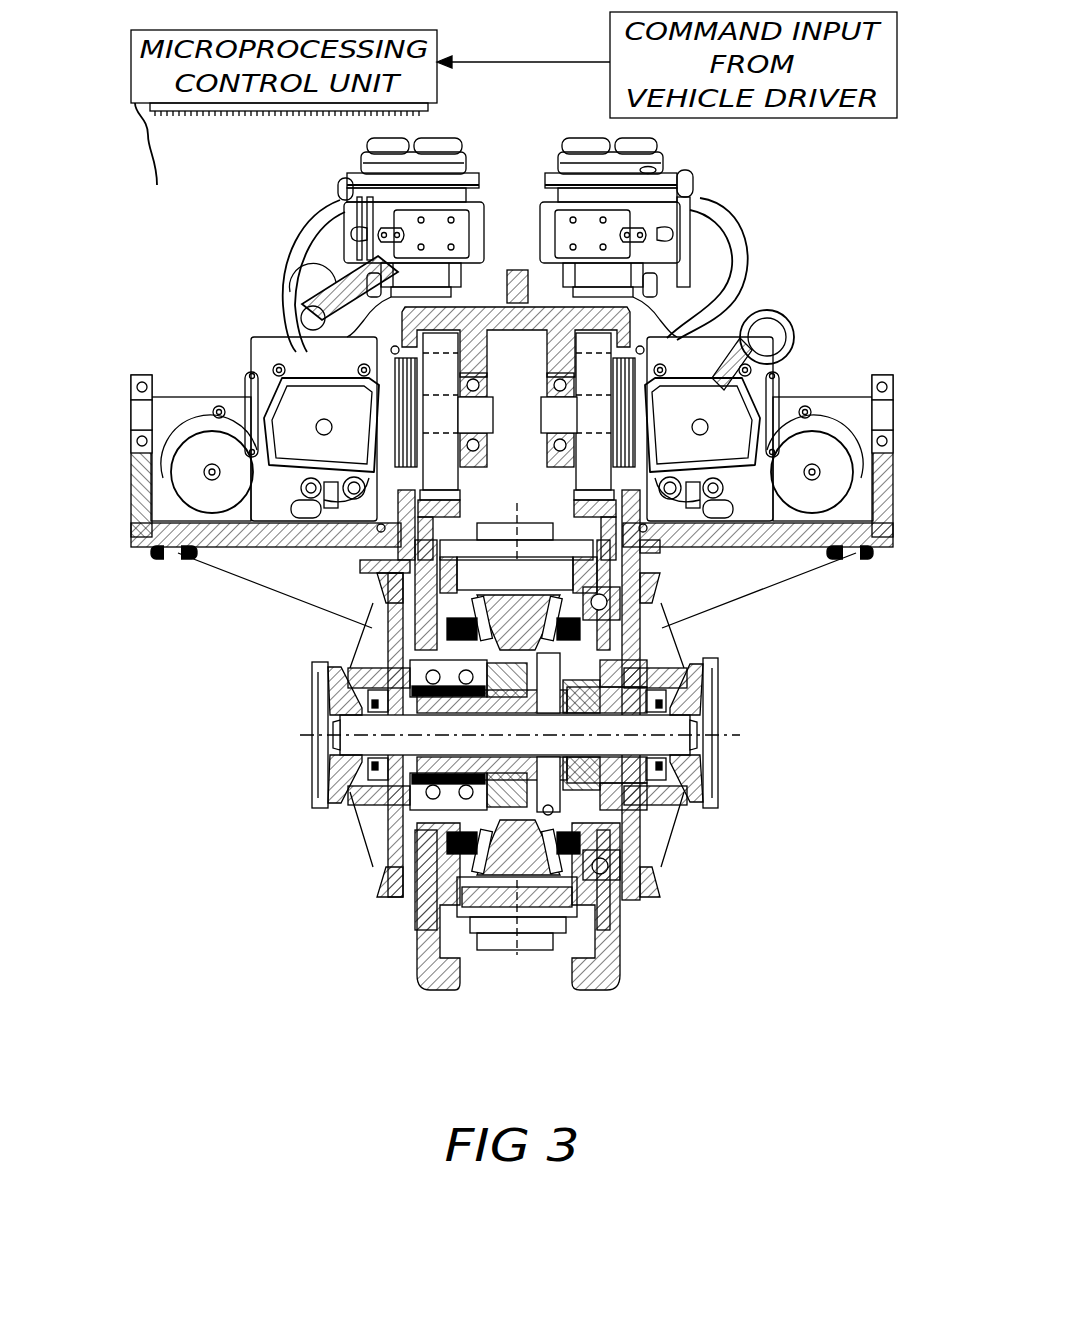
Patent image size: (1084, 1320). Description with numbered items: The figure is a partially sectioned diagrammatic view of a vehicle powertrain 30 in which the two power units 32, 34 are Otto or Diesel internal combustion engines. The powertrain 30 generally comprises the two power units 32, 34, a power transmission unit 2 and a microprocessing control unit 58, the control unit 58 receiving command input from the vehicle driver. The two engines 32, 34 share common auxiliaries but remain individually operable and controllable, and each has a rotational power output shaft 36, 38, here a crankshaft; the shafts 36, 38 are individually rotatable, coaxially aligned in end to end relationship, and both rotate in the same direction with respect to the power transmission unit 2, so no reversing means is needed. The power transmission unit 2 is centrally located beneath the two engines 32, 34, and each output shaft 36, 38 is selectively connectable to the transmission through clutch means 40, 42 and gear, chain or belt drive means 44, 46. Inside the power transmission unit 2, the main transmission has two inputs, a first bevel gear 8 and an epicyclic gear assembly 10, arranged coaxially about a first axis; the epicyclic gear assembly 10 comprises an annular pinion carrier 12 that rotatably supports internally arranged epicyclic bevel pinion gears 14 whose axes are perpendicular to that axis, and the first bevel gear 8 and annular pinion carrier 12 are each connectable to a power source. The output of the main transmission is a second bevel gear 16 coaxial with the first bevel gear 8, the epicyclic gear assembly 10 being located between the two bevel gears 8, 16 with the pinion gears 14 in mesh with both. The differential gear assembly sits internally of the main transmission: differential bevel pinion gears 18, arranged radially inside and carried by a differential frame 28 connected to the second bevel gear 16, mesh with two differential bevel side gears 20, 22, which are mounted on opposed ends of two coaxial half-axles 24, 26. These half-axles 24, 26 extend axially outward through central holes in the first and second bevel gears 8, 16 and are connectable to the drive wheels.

The power transmission unit 2 is at (312, 921).
The first bevel gear 8 is at (450, 863).
The epicyclic gear assembly 10 is at (490, 962).
The annular pinion carrier 12 is at (538, 912).
The epicyclic bevel pinion gears 14 is at (425, 655).
The second bevel gear 16 is at (578, 860).
The differential bevel pinion gears 18 is at (353, 740).
The differential bevel side gear 20 is at (383, 797).
The differential bevel side gear 22 is at (598, 765).
The power output member 24 is at (310, 770).
The power output member 26 is at (722, 732).
The differential frame 28 is at (645, 660).
The vehicle powertrain 30 is at (742, 190).
The power unit 32 is at (203, 354).
The power unit 34 is at (812, 354).
The power output shaft 36 is at (390, 407).
The power output shaft 38 is at (625, 385).
The clutch means 40 is at (402, 378).
The clutch means 42 is at (650, 405).
The gear, chain or belt drive means 44 is at (440, 462).
The gear, chain or belt drive means 46 is at (590, 453).
The microprocessing control unit 58 is at (281, 159).